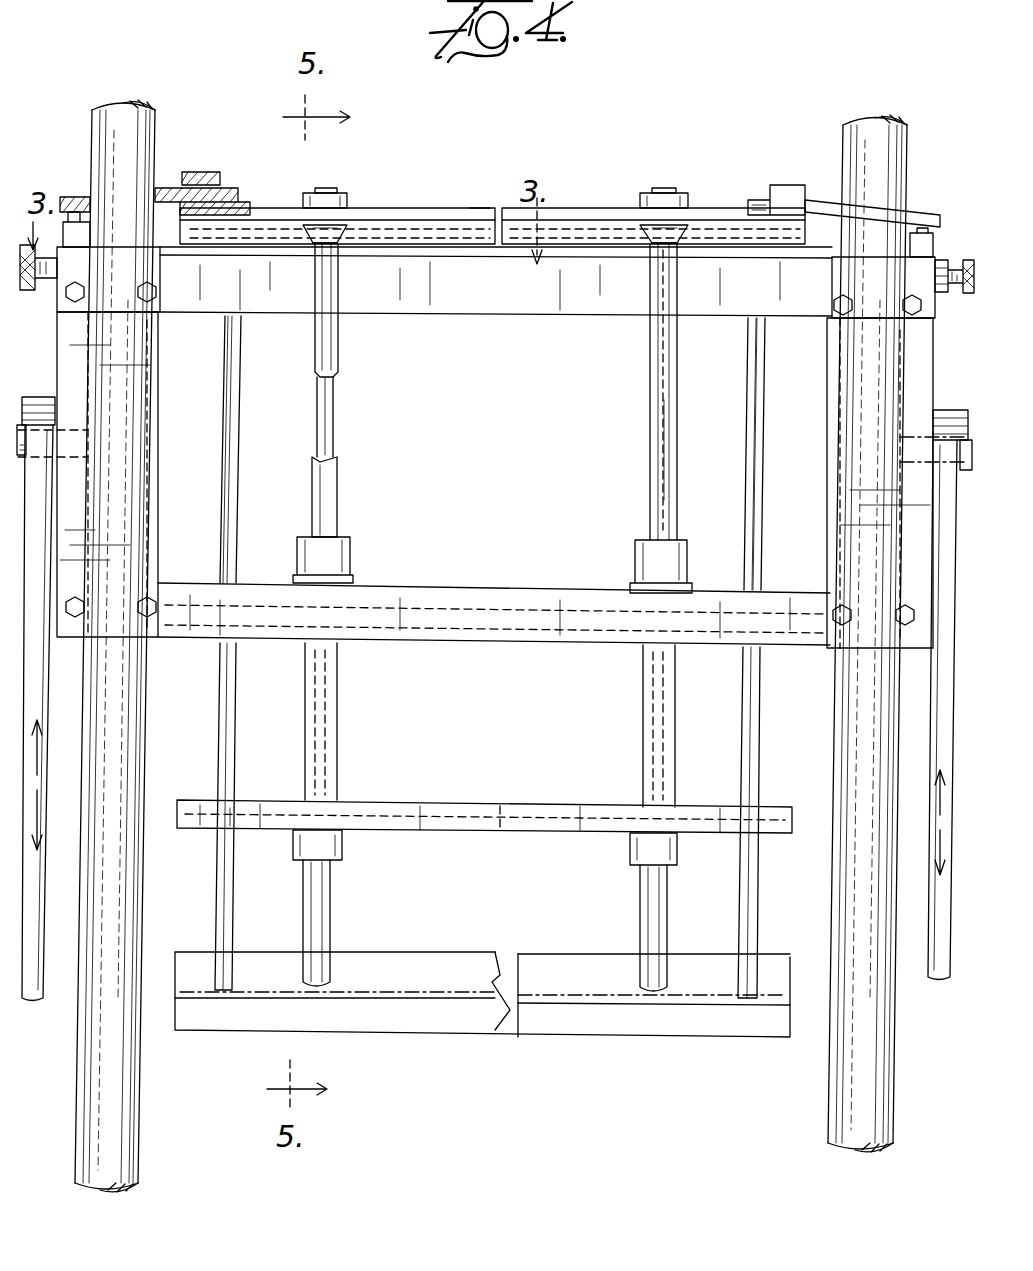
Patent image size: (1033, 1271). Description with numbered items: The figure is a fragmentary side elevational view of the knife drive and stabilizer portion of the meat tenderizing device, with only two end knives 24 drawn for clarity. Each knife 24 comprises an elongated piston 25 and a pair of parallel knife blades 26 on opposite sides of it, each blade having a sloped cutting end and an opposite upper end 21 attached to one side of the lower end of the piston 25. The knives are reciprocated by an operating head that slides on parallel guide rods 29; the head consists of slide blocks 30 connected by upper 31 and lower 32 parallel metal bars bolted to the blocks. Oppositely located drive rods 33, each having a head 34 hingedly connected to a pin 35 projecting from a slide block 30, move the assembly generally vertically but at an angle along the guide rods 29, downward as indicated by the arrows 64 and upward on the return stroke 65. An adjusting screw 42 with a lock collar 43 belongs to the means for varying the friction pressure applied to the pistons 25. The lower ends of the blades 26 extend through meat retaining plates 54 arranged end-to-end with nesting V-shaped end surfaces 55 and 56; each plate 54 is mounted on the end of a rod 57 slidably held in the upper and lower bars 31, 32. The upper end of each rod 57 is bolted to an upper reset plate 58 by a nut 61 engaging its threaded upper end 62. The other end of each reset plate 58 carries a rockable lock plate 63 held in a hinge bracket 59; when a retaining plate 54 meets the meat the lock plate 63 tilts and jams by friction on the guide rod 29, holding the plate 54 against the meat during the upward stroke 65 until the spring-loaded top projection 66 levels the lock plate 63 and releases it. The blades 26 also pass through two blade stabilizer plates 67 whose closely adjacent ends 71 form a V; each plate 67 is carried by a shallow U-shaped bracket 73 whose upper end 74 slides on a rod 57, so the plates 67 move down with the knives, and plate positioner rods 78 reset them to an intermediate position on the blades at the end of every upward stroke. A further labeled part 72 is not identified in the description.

The upper end of blade 21 is at (467, 196).
The knife 24 is at (214, 513).
The piston 25 is at (240, 387).
The knife blade 26 is at (230, 920).
The guide rod 29 is at (148, 128).
The slide block 30 is at (130, 510).
The upper bar 31 is at (490, 304).
The lower bar 32 is at (495, 590).
The drive rod 33 is at (40, 570).
The head 34 is at (40, 396).
The pin 35 is at (55, 430).
The adjusting screw 42 is at (30, 292).
The lock collar 43 is at (62, 264).
The meat retaining plate 54 is at (215, 1038).
The V-shaped end surface 55 is at (520, 967).
The V-shaped end surface 56 is at (500, 962).
The rod 57 is at (339, 372).
The upper reset plate 58 is at (388, 209).
The hinge bracket 59 is at (213, 173).
The nut 61 is at (348, 193).
The threaded upper end 62 is at (316, 190).
The lock plate 63 is at (67, 196).
The downward movement arrow 64 is at (42, 822).
The upward return stroke arrow 65 is at (40, 762).
The top projection 66 is at (72, 234).
The blade stabilizer plate 67 is at (395, 804).
The adjacent ends of stabilizer plates 71 is at (520, 806).
The hidden line of cross member 72 is at (500, 805).
The U-shaped bracket 73 is at (338, 724).
The upper end of bracket 74 is at (350, 554).
The plate positioner rod 78 is at (335, 434).